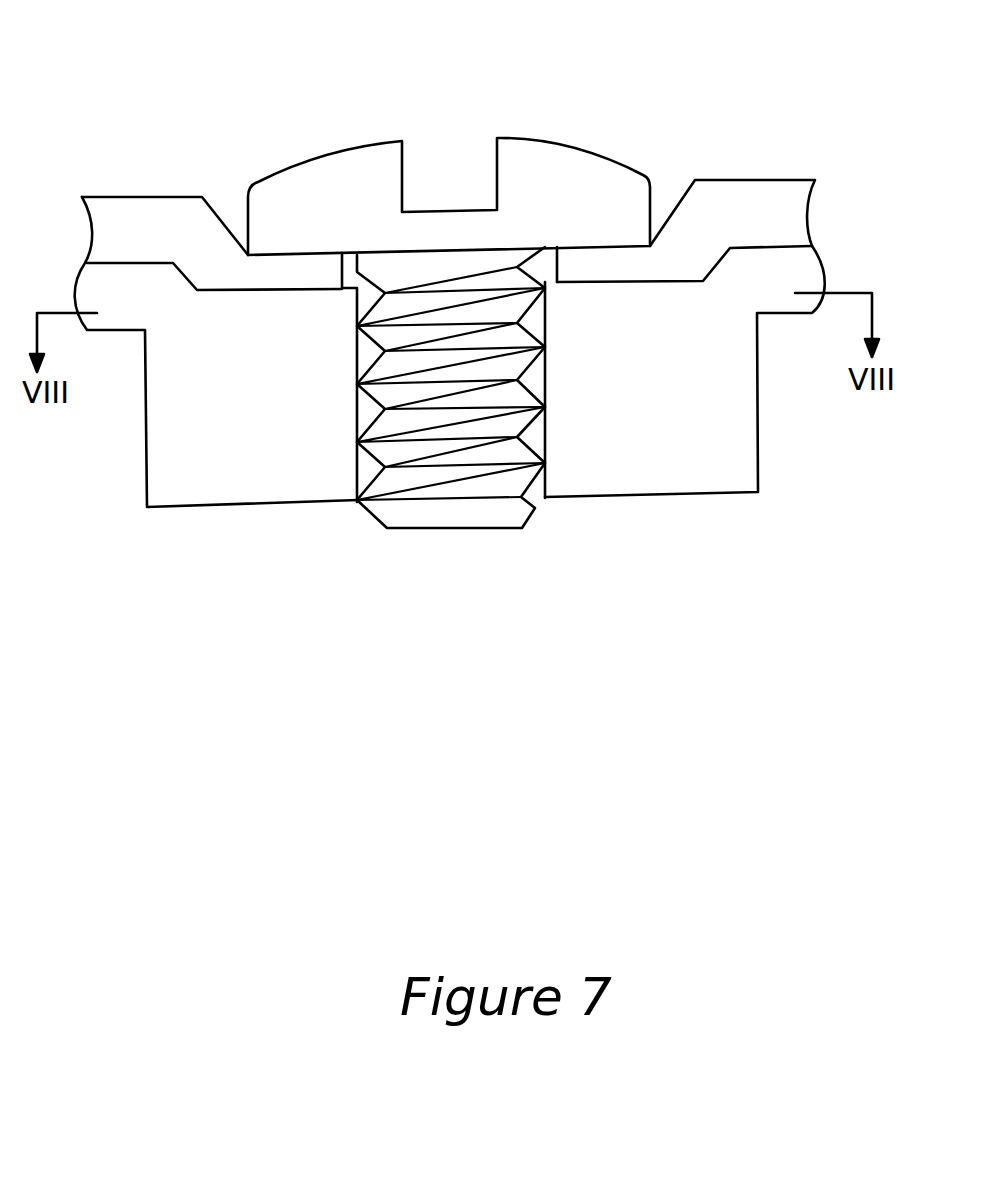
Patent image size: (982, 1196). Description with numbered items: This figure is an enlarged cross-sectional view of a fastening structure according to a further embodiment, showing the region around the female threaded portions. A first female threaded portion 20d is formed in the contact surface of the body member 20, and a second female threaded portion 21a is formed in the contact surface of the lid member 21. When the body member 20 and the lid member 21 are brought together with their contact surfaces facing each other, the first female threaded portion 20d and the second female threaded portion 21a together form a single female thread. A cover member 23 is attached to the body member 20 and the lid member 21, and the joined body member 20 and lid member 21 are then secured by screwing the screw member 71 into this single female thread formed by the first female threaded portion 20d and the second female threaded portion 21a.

The screw member 71 is at (570, 147).
The lid member 21 is at (108, 302).
The second female threaded portion 21a is at (395, 433).
The body member 20 is at (783, 265).
The first female threaded portion 20d is at (512, 433).
The cover member 23 is at (797, 210).